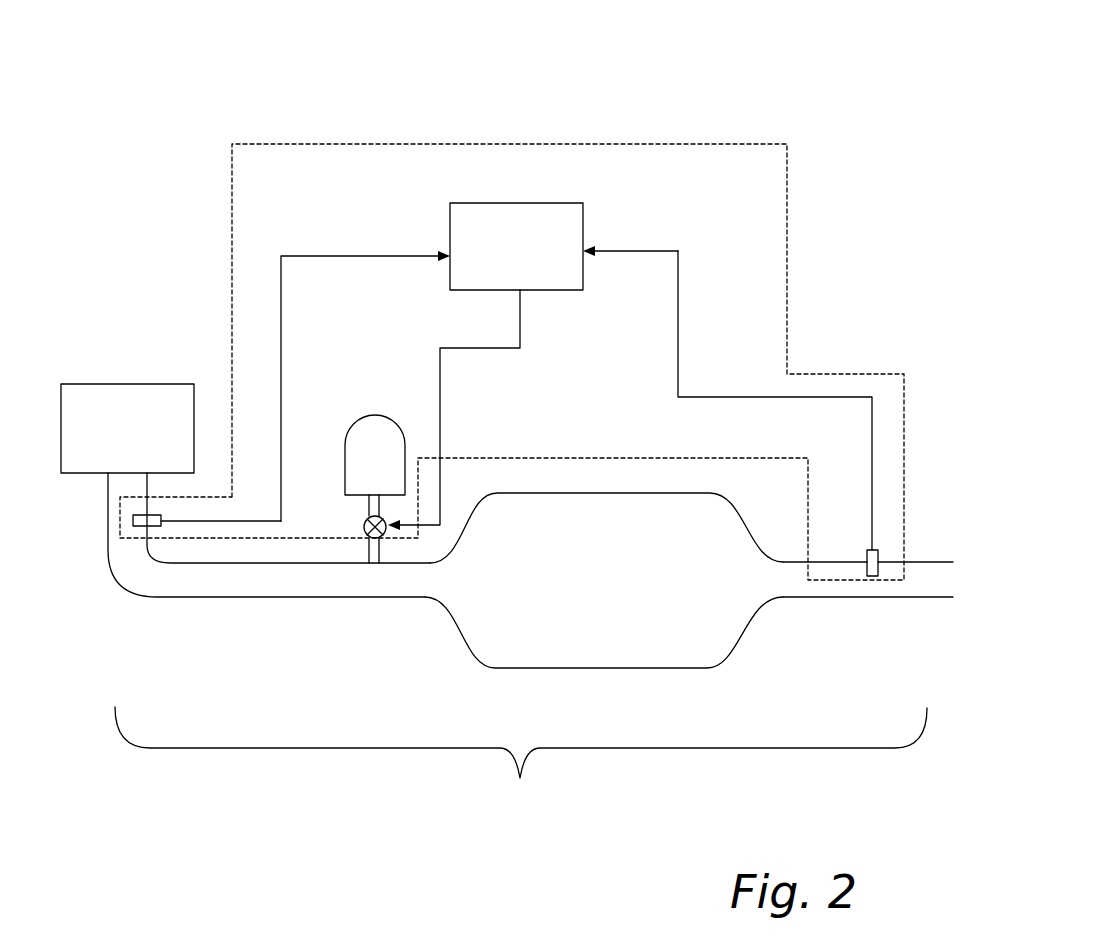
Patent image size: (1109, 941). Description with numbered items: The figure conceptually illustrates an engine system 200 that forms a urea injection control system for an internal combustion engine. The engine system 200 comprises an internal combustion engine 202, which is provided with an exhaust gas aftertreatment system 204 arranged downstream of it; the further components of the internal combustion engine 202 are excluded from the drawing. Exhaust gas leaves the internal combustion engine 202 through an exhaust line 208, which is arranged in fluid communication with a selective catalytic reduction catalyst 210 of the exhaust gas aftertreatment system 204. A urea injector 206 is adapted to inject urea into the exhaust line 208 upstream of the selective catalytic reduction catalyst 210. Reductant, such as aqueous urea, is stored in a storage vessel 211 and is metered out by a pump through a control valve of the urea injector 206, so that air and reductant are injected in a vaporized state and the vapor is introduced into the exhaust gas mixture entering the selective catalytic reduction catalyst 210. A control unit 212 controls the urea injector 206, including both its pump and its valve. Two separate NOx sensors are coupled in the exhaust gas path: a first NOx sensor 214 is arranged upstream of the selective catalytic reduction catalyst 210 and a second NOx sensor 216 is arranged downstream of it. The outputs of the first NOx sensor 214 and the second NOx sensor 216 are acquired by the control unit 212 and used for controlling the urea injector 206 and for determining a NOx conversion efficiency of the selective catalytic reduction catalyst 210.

The engine system 200 is at (766, 104).
The internal combustion engine 202 is at (121, 383).
The exhaust gas aftertreatment system 204 is at (521, 761).
The urea injector 206 is at (365, 521).
The exhaust line 208 is at (210, 600).
The selective catalytic reduction catalyst 210 is at (690, 668).
The storage vessel 211 is at (375, 455).
The control unit 212 is at (583, 225).
The first NOx sensor 214 is at (140, 527).
The second NOx sensor 216 is at (865, 558).